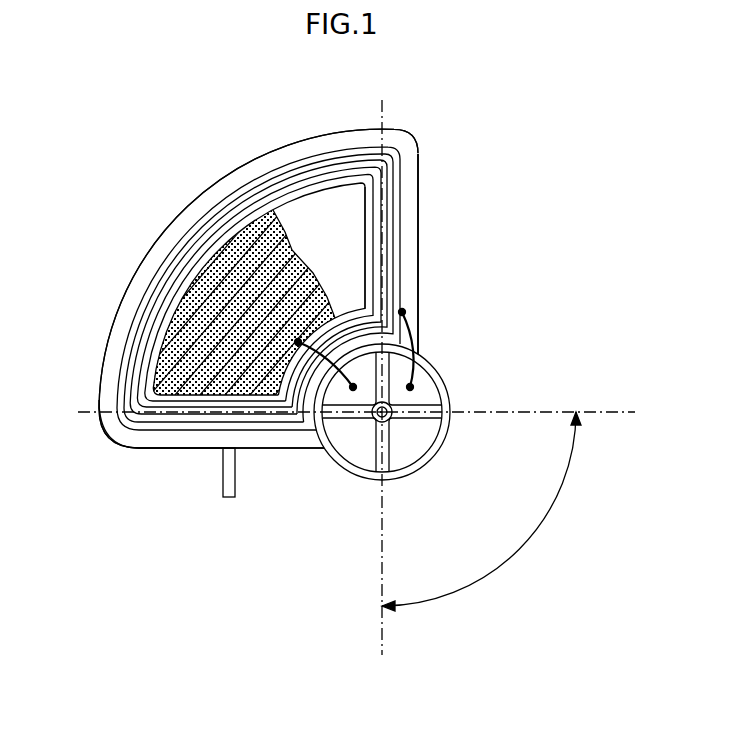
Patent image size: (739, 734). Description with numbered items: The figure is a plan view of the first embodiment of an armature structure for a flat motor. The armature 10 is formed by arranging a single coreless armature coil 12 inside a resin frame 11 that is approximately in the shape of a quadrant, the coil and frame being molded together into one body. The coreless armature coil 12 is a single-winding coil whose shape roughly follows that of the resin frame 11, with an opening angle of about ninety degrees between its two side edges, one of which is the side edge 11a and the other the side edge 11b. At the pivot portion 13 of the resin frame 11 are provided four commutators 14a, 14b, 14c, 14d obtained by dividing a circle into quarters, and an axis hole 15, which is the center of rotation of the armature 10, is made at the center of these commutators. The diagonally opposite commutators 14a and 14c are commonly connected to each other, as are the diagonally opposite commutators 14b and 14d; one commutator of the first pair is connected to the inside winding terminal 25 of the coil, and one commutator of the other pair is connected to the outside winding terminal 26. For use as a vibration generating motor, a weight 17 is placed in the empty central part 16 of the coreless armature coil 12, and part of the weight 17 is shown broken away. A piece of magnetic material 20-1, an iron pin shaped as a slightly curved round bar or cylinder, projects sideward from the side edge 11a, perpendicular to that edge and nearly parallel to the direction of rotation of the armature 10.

The armature 10 is at (422, 153).
The resin frame 11 is at (262, 150).
The side edge 11a is at (148, 450).
The case side portion 11b is at (418, 247).
The coreless armature coil 12 is at (232, 215).
The pivot portion 13 is at (435, 458).
The commutator 14a is at (370, 357).
The commutator 14b is at (434, 397).
The commutator 14c is at (433, 435).
The commutator 14d is at (358, 458).
The axis hole 15 is at (390, 418).
The empty central part 16 is at (348, 215).
The weight 17 is at (200, 330).
The piece of magnetic material 20-1 is at (225, 497).
The inside winding terminal 25 is at (354, 391).
The outside winding terminal 26 is at (421, 379).